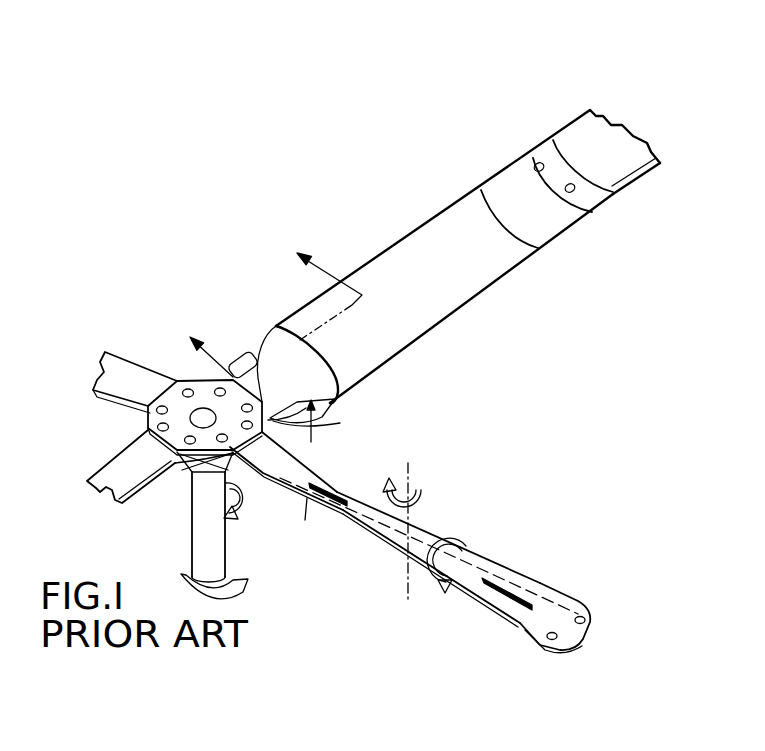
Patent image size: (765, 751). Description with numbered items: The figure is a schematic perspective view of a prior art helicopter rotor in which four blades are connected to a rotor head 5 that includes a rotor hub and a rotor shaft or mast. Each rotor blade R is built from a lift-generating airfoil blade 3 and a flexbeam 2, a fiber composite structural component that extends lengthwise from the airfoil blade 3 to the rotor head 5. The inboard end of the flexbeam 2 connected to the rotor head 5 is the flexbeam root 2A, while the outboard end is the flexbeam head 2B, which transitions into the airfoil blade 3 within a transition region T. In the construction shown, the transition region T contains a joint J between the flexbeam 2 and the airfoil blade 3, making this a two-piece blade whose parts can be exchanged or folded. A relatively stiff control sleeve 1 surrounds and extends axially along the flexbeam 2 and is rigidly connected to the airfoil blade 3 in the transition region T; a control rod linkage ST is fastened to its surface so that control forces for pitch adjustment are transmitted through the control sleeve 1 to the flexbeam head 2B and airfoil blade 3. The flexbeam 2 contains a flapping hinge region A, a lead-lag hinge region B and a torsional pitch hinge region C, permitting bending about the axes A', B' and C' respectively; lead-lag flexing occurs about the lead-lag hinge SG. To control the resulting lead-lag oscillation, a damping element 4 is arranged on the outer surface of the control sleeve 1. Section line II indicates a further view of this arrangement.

The rotor blade R is at (396, 58).
The transition region T is at (458, 231).
The control sleeve 1 is at (458, 249).
The flexbeam 2 is at (345, 485).
The flexbeam root 2A is at (312, 457).
The flexbeam head 2B is at (570, 600).
The airfoil blade 3 is at (588, 132).
The damping element 4 is at (292, 362).
The rotor head 5 is at (152, 422).
The joint J is at (590, 205).
The section line II- II is at (263, 301).
The control rod linkage ST is at (316, 421).
The flapping hinge region A is at (312, 526).
The flapping axis A' is at (249, 519).
The lead-lag hinge region B is at (442, 517).
The lead-lag axis B' is at (422, 485).
The torsional or pitch hinge region C is at (463, 533).
The torsion axis C' is at (444, 584).
The lead-lag hinge SG is at (397, 550).